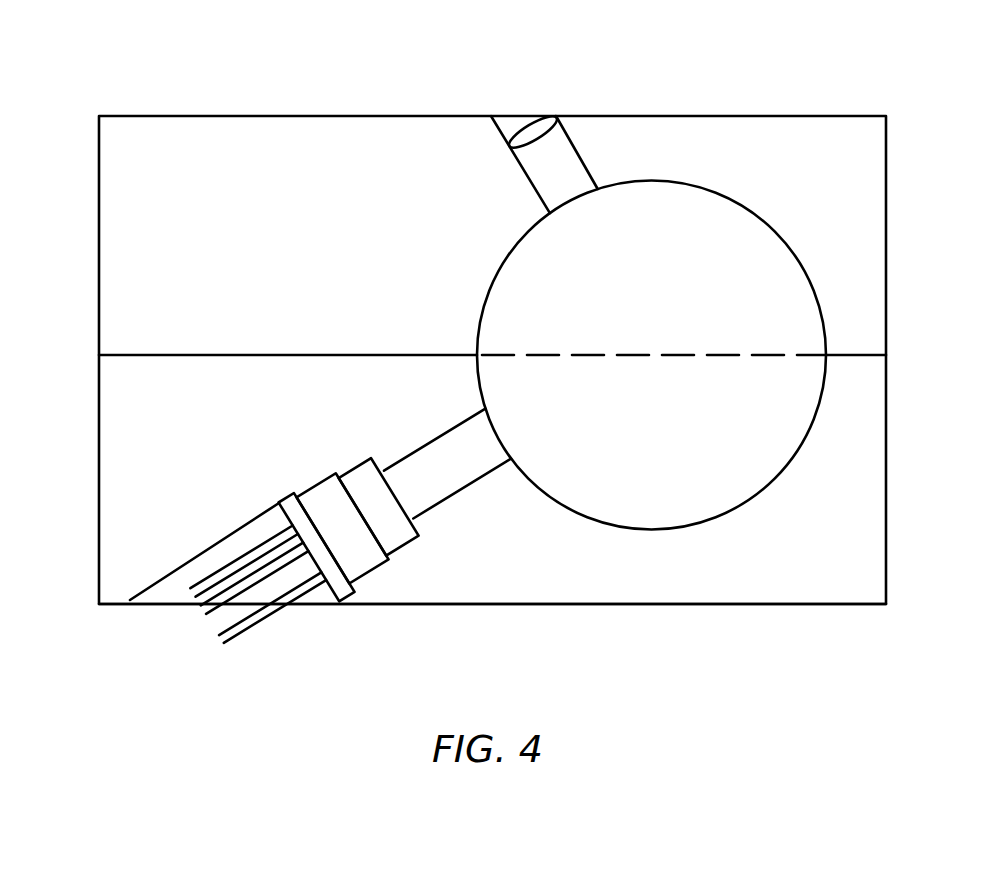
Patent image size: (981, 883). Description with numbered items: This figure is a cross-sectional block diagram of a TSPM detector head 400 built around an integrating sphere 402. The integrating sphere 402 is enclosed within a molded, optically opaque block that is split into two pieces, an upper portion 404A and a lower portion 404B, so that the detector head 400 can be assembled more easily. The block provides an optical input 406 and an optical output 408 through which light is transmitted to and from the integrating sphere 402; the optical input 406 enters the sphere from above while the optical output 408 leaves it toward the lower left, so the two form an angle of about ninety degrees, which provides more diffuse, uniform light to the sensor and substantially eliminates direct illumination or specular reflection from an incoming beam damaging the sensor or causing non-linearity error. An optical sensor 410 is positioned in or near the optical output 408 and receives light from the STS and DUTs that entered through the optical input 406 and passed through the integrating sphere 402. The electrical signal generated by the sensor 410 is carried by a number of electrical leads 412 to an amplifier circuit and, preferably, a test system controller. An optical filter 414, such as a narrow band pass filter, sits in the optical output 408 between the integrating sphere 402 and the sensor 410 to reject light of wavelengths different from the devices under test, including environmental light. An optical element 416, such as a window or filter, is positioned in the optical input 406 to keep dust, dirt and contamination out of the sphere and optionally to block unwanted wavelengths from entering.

The TSPM detector head 400 is at (140, 56).
The integrating sphere 402 is at (677, 219).
The upper portion of block 404A is at (221, 179).
The lower portion of block 404B is at (221, 404).
The optical input 406 is at (512, 150).
The optical output 408 is at (432, 443).
The optical sensor 410 is at (307, 491).
The electrical leads 412 is at (242, 664).
The optical filter 414 is at (414, 536).
The optical element 416 is at (556, 126).